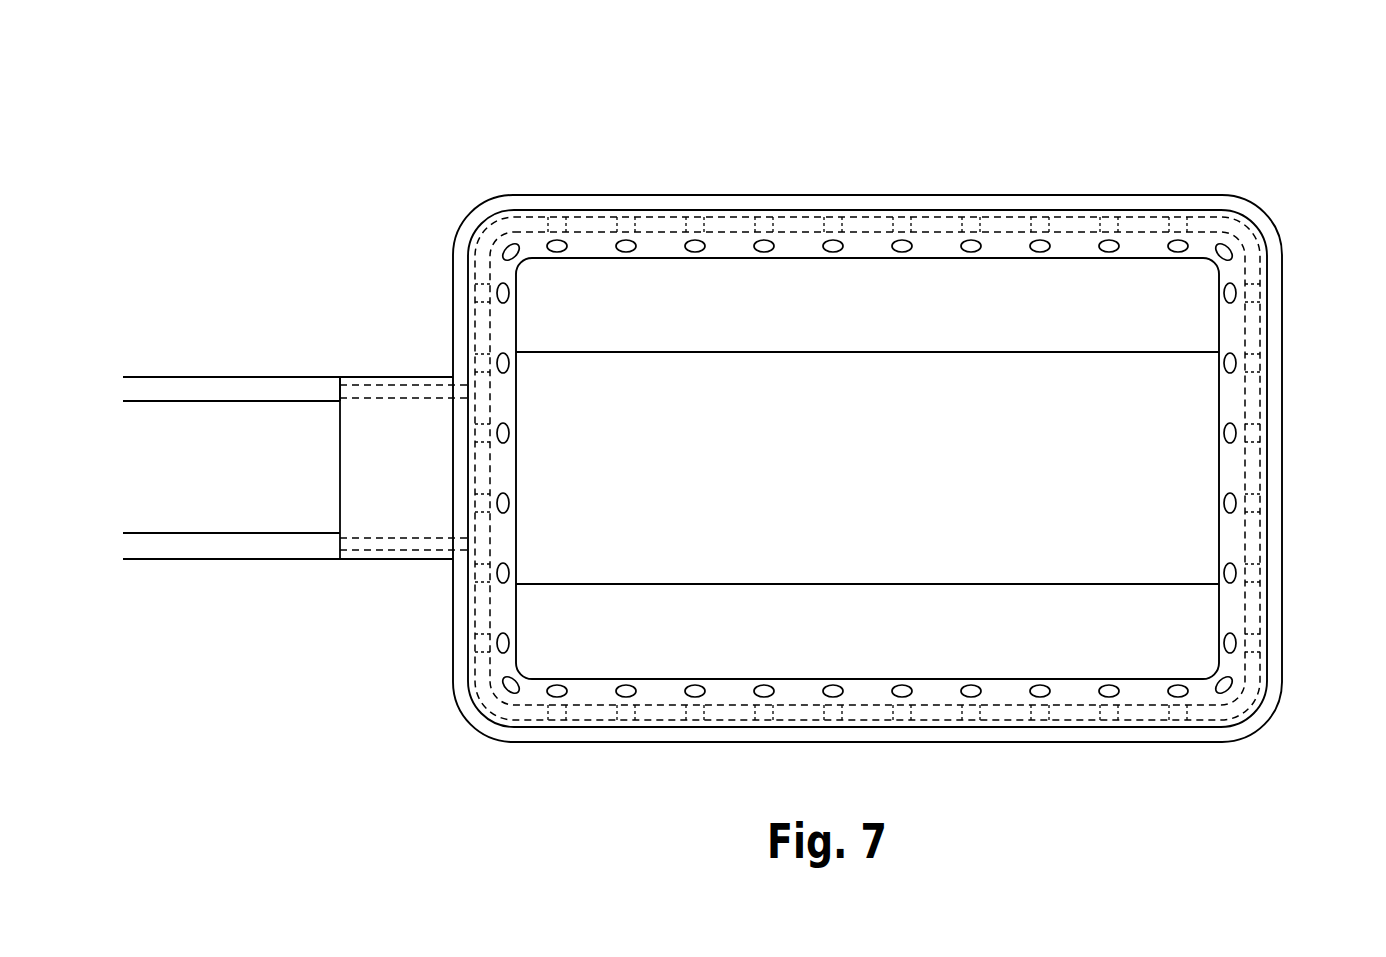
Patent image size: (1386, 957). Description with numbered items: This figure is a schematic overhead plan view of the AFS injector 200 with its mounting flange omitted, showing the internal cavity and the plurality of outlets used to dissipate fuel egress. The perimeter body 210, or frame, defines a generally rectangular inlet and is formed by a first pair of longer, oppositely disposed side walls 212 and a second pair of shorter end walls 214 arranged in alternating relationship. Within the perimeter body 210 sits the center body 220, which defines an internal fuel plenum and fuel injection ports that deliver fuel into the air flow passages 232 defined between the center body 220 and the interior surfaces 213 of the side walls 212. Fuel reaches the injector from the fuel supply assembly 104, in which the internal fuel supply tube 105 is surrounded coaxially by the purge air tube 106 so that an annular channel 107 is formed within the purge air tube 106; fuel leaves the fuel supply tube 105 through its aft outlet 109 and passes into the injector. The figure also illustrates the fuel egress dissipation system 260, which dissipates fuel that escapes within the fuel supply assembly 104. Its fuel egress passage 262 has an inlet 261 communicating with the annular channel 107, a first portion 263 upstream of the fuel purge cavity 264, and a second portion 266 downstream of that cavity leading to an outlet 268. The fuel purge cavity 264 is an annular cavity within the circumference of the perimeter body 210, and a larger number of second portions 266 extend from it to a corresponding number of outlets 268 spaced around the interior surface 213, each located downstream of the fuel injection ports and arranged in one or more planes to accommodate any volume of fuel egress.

The AFS injector 200 is at (390, 118).
The fuel supply assembly 104 is at (186, 345).
The fuel supply tube 105 is at (158, 533).
The purge air tube 106 is at (197, 560).
The annular channel 107 is at (272, 548).
The aft outlet 109 is at (340, 453).
The perimeter body 210 is at (1170, 162).
The side walls 212 is at (1060, 194).
The interior surface 213 is at (878, 259).
The end walls 214 is at (1283, 293).
The center body 220 is at (1195, 414).
The air flow passages 232 is at (979, 330).
The fuel egress dissipation system 260 is at (617, 718).
The inlet 261 is at (338, 380).
The fuel egress passage 262 is at (490, 590).
The first portion 263 is at (396, 382).
The fuel purge cavity 264 is at (512, 212).
The second portion 266 is at (765, 705).
The outlet 268 is at (557, 253).